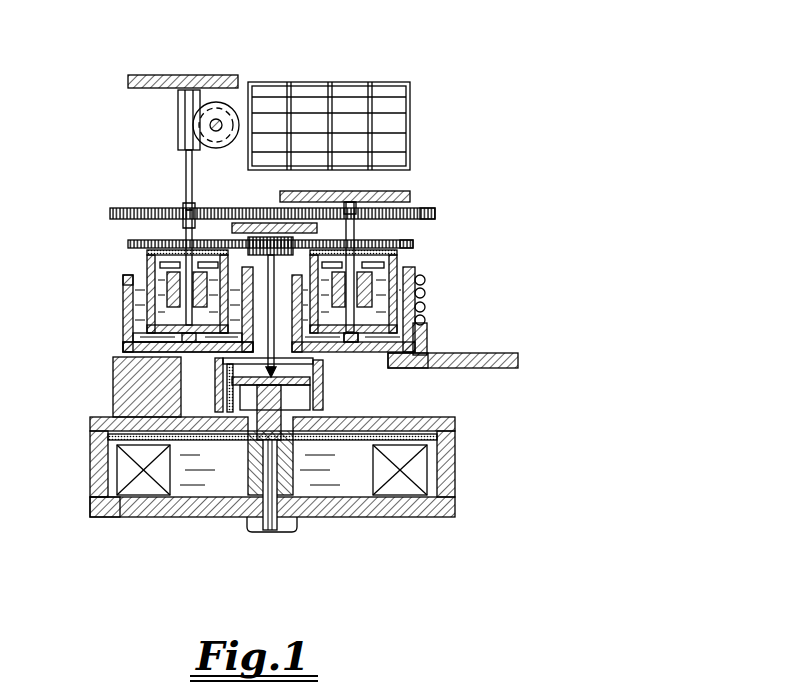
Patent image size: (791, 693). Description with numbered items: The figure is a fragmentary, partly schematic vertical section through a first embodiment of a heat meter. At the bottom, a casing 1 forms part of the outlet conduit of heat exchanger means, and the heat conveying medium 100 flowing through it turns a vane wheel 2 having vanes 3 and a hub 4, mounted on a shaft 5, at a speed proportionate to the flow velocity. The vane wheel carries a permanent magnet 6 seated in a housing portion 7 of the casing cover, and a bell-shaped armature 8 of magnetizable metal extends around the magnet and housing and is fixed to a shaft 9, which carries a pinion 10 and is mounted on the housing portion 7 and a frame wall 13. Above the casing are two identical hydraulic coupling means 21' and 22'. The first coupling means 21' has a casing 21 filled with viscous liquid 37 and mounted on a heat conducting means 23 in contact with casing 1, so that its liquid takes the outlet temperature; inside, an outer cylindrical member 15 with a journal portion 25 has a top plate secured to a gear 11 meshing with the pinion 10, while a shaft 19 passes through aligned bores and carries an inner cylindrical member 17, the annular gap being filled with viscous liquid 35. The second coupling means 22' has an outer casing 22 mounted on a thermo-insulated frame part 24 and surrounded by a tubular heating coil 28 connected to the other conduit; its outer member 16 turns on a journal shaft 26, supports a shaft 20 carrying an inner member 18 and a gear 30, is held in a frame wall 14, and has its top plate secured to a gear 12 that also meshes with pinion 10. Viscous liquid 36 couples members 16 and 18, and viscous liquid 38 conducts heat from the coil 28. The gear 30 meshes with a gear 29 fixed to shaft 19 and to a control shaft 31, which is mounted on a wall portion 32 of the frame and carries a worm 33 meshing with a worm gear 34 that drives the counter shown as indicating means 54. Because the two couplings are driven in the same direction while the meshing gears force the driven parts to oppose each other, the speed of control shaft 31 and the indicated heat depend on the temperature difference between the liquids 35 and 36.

The casing 1 is at (116, 512).
The vane wheel 2 is at (213, 452).
The vanes 3 is at (155, 483).
The hub 4 is at (293, 474).
The shaft 5 is at (292, 500).
The permanent magnet 6 is at (330, 398).
The housing portion 7 is at (213, 397).
The bell-shaped armature 8 is at (326, 373).
The shaft 9 is at (266, 286).
The pinion 10 is at (354, 238).
The gear 11 is at (130, 242).
The gear 12 is at (417, 243).
The frame wall 13 is at (226, 216).
The frame wall 14 is at (395, 191).
The outer cylindrical member 15 is at (173, 290).
The outer member 16 is at (425, 277).
The inner cylindrical member 17 is at (196, 300).
The inner member 18 is at (427, 308).
The shaft 19 is at (180, 335).
The shaft 20 is at (427, 316).
The casing 21 is at (155, 309).
The first hydraulic coupling means 21' is at (96, 271).
The outer casing 22 is at (476, 337).
The second hydraulic coupling means 22' is at (417, 294).
The heat conducting means 23 is at (121, 361).
The frame part 24 is at (486, 361).
The journal portion 25 is at (177, 343).
The journal shaft 26 is at (352, 348).
The tubular heating coil 28 is at (425, 294).
The gear 29 is at (122, 208).
The gear 30 is at (440, 210).
The control shaft 31 is at (186, 178).
The wall portion 32 is at (145, 74).
The worm 33 is at (182, 122).
The worm gear 34 is at (222, 116).
The viscous liquid 35 is at (148, 263).
The viscous liquid 36 is at (418, 260).
The viscous liquid 37 is at (180, 357).
The viscous liquid 38 is at (417, 354).
The indicating means 54 is at (330, 76).
The heat conveying medium 100 is at (112, 500).